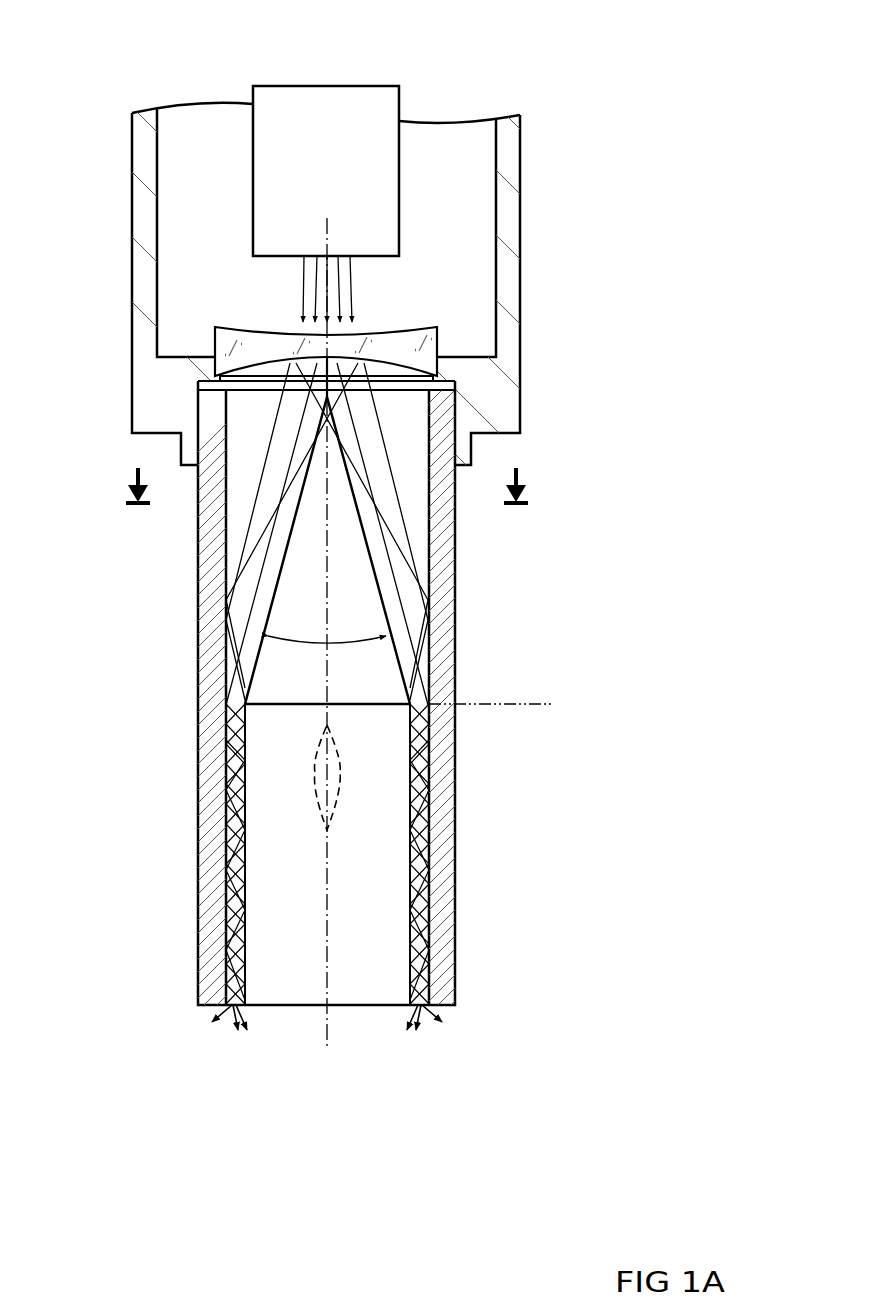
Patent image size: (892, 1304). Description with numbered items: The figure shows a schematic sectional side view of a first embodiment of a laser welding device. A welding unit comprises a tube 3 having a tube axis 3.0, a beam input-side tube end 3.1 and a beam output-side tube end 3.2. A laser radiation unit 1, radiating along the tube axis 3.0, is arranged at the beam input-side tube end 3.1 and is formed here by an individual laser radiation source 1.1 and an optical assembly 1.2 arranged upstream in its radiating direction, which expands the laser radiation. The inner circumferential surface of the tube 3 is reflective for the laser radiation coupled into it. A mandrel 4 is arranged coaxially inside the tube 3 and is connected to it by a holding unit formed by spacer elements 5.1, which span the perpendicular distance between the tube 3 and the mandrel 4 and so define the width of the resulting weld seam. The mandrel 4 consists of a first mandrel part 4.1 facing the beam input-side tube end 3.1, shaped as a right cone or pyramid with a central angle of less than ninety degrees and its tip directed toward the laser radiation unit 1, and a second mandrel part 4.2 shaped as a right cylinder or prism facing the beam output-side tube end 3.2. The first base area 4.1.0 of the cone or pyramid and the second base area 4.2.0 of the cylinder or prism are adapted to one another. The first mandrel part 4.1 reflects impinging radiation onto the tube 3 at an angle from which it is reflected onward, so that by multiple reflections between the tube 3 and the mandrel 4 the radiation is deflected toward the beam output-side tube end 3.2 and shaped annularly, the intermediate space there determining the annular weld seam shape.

The laser radiation unit 1 is at (647, 12).
The laser radiation source 1.1 is at (385, 108).
The optical assembly 1.2 is at (440, 322).
The tube 3 is at (443, 945).
The beam input-side tube end 3.1 is at (407, 398).
The beam output-side tube end 3.2 is at (433, 1010).
The tube axis 3.0 is at (323, 1037).
The mandrel 4 is at (637, 882).
The first mandrel part 4.1 is at (370, 583).
The second mandrel part 4.2 is at (395, 872).
The first base area 4.1.0 is at (509, 706).
The second base area 4.2.0 is at (488, 701).
The spacer element 5.1 is at (340, 783).